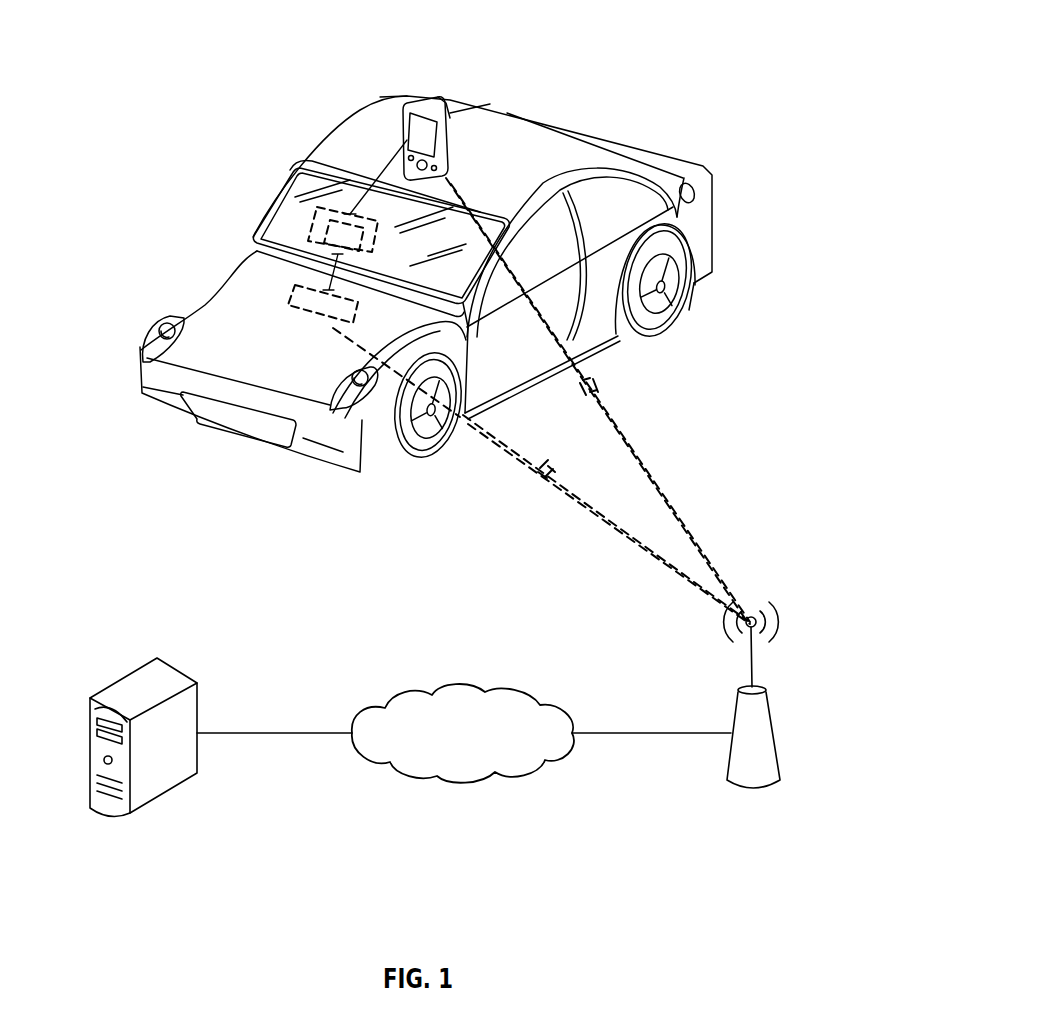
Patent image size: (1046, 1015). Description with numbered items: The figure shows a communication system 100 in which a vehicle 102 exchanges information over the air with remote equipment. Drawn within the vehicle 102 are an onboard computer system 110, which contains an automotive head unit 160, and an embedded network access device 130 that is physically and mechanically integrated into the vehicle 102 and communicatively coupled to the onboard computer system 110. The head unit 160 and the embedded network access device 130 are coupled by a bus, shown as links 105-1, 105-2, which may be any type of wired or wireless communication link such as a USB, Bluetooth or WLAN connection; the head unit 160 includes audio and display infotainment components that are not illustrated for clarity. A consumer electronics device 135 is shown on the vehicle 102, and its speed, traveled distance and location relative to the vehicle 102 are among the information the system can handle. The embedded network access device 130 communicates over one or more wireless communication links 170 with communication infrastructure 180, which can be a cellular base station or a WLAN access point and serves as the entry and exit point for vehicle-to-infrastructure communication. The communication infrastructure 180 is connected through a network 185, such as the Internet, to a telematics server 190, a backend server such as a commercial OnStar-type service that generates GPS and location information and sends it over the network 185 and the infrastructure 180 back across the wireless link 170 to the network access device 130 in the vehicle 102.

The communication system 100 is at (212, 50).
The vehicle 102 is at (380, 97).
The consumer electronics device 135 is at (405, 135).
The bus 105-1 is at (327, 288).
The bus 105-2 is at (375, 177).
The onboard computer system 110 is at (305, 212).
The automotive head unit 160 is at (325, 224).
The embedded network access device 130 is at (290, 288).
The wireless communication link 170 is at (552, 492).
The communication infrastructure 180 is at (735, 712).
The network 185 is at (463, 690).
The telematics server 190 is at (125, 675).